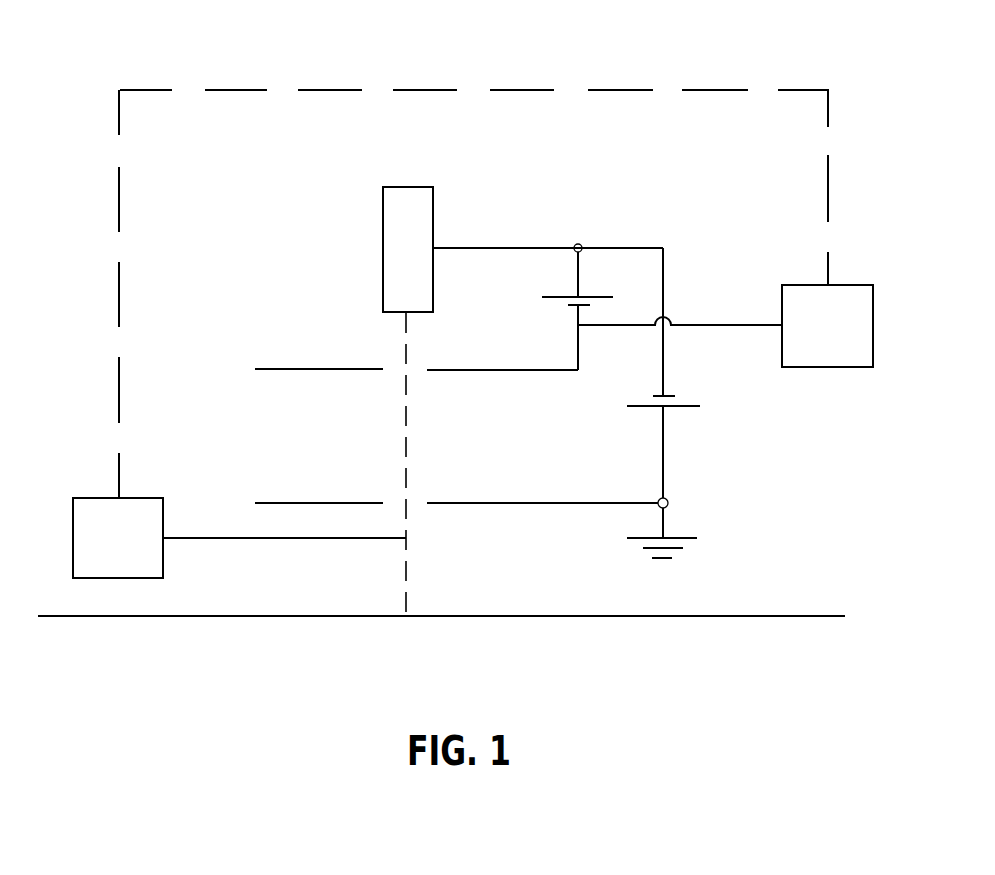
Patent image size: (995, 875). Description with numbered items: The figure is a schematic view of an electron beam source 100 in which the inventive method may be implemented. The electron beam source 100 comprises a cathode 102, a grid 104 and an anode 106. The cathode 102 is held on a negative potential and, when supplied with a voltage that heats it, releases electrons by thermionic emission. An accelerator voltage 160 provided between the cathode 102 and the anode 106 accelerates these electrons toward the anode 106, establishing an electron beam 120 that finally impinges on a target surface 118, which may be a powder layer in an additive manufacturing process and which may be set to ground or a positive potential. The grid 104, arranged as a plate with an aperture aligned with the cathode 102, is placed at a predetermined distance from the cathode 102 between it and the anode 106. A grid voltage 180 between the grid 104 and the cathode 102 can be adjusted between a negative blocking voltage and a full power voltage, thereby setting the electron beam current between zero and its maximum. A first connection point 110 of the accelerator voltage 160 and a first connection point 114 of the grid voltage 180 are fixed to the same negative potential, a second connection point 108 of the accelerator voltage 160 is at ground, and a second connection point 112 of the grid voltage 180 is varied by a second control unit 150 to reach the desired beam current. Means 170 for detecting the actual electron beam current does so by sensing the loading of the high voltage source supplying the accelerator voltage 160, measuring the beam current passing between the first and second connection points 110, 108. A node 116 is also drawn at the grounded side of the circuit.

The electron beam source 100 is at (745, 39).
The cathode 102 is at (392, 210).
The grid 104 is at (284, 369).
The anode 106 is at (285, 503).
The second connection point of the accelerator voltage 108 is at (680, 407).
The first connection point of the accelerator voltage 110 is at (669, 395).
The second connection point of the grid voltage 112 is at (576, 307).
The first connection point of the grid voltage 114 is at (598, 296).
The ground node 116 is at (692, 538).
The target surface 118 is at (748, 616).
The electron beam 120 is at (406, 453).
The second control unit 150 is at (827, 326).
The accelerator voltage 160 is at (708, 395).
The means for detecting the actual electron beam current 170 is at (239, 538).
The grid voltage 180 is at (548, 308).